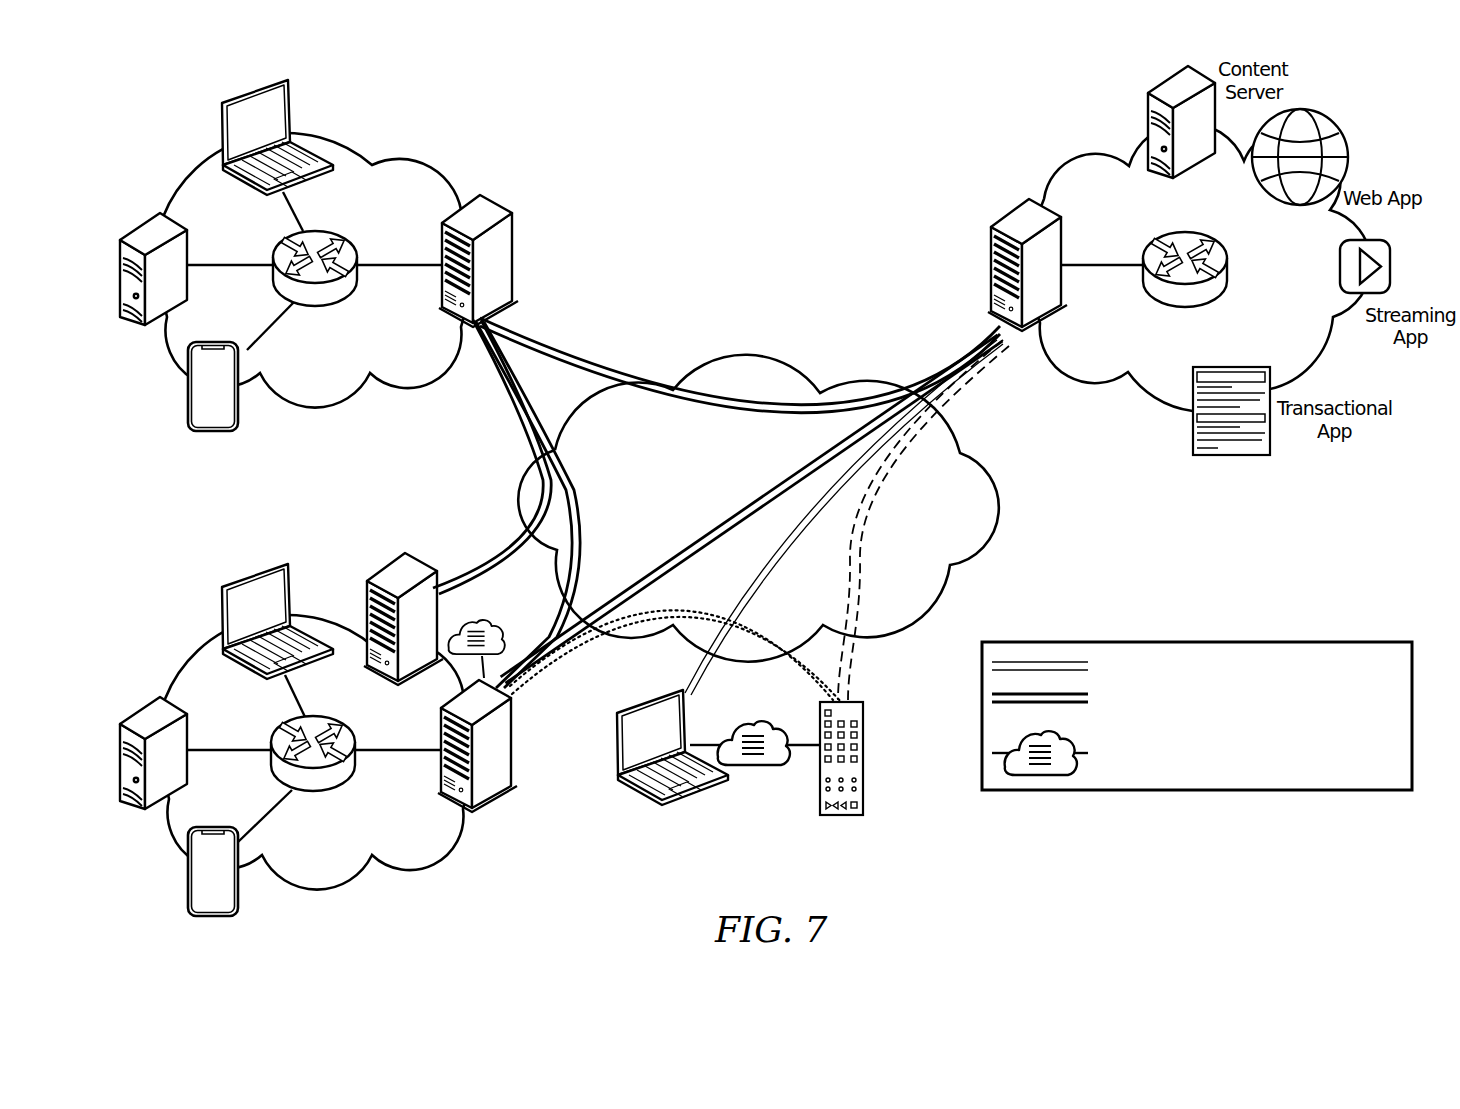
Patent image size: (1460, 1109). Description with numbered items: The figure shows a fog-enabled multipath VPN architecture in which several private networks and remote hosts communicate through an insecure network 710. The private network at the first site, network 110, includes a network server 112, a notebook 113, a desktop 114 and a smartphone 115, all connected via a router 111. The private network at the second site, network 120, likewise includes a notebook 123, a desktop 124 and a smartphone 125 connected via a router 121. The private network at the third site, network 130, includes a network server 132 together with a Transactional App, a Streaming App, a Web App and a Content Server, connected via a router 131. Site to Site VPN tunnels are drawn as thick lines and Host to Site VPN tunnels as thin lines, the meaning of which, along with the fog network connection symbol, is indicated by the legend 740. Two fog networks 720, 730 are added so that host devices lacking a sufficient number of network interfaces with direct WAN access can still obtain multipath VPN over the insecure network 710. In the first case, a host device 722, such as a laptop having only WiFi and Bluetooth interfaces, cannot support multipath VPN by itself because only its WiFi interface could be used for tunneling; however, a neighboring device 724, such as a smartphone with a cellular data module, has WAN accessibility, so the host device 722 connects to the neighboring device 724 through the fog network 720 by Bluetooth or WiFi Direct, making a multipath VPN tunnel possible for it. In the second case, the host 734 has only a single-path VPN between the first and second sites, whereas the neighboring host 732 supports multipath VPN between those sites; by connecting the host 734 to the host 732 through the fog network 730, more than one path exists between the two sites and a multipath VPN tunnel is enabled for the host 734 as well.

The private network at Site 1 110 is at (392, 94).
The router 111 is at (335, 290).
The network server 112 is at (515, 256).
The notebook 113 is at (220, 120).
The desktop 114 is at (140, 222).
The smartphone 115 is at (188, 385).
The private network at Site 2 120 is at (395, 910).
The router 121 is at (335, 773).
The notebook 123 is at (220, 602).
The desktop 124 is at (140, 705).
The smartphone 125 is at (188, 868).
The private network at Site 3 130 is at (1046, 106).
The router 131 is at (1167, 287).
The network server 132 is at (991, 262).
The insecure network 710 is at (830, 309).
The fog network 720 is at (762, 830).
The host device 722 is at (617, 762).
The neighboring device 724 is at (865, 736).
The fog network 730 is at (516, 618).
The neighboring host 732 is at (512, 716).
The host 734 is at (382, 563).
The legend 740 is at (1268, 815).